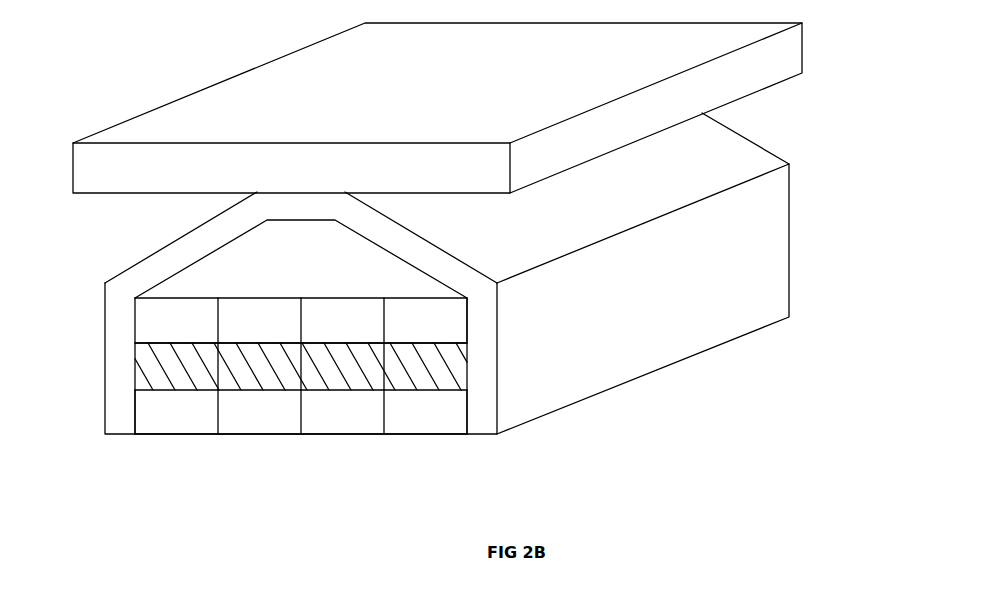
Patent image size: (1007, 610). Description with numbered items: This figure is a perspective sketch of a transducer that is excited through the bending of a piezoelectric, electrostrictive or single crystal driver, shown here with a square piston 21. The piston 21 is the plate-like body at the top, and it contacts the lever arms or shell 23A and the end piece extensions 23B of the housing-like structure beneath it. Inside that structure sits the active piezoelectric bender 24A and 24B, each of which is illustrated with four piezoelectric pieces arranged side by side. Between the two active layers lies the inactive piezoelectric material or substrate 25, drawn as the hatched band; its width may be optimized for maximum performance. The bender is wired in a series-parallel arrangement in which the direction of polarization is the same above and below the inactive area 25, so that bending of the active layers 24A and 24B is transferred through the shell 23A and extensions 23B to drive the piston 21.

The piston 21 is at (437, 108).
The lever arms or shell 23A is at (722, 139).
The end piece extensions 23B is at (753, 283).
The active piezoelectric bender 24A is at (175, 413).
The active piezoelectric bender 24B is at (175, 323).
The inactive piezoelectric material or substrate 25 is at (175, 367).